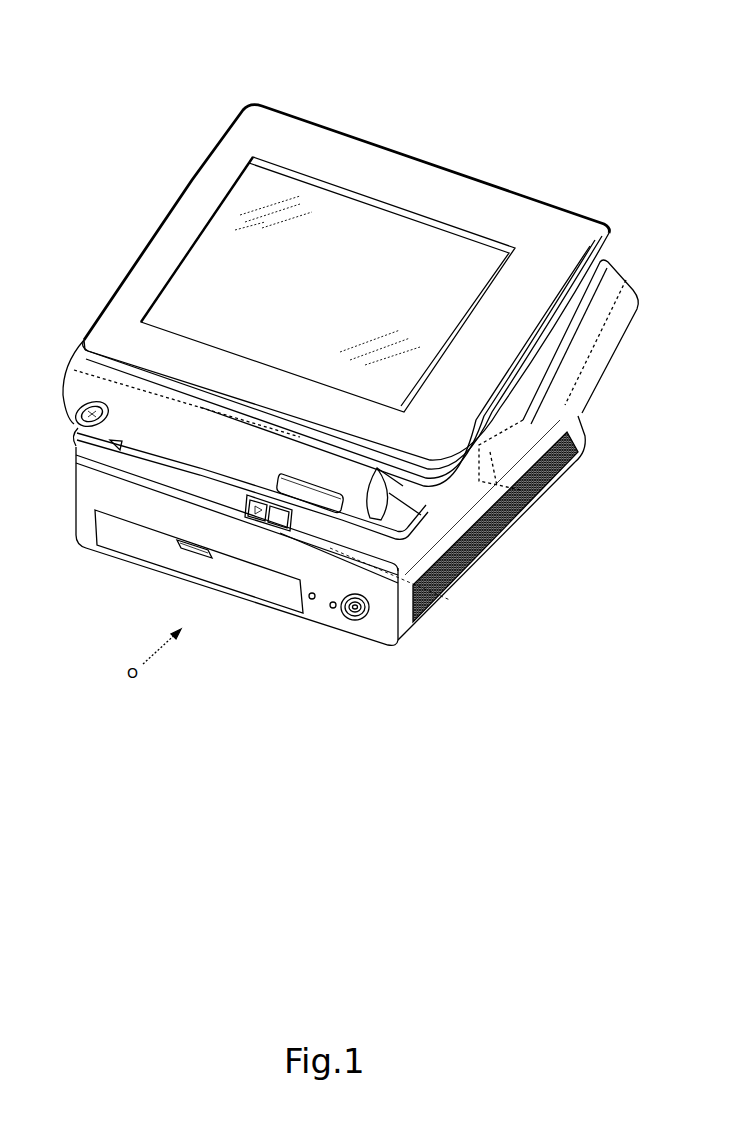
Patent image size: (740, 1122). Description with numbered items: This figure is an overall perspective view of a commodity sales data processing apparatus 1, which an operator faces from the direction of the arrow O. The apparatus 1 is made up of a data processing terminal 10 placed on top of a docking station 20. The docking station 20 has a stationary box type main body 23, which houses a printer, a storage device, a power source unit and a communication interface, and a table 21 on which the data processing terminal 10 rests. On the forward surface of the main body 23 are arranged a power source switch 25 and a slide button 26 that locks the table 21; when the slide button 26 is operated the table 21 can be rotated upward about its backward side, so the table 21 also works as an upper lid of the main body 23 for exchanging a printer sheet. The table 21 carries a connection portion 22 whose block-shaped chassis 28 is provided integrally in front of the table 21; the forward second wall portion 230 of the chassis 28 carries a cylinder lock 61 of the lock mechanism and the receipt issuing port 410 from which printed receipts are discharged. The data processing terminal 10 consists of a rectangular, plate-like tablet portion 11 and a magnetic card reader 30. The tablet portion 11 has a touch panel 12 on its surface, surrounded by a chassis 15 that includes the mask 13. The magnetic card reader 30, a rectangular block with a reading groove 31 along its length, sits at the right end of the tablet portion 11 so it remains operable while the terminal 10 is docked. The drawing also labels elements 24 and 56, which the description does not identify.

The commodity sales data processing apparatus 1 is at (508, 68).
The data processing terminal 10 is at (299, 111).
The tablet portion 11 is at (485, 175).
The touch panel 12 is at (207, 250).
The mask 13 is at (147, 262).
The chassis 15 is at (413, 152).
The docking station 20 is at (69, 494).
The table 21 is at (445, 600).
The connection portion 22 is at (78, 352).
The main body 23 is at (73, 519).
The tray 24 is at (185, 566).
The power source switch 25 is at (352, 622).
The slide button 26 is at (260, 522).
The chassis 28 is at (63, 390).
The magnetic card reader 30 is at (607, 260).
The reading groove 31 is at (508, 522).
The operation button 56 is at (286, 530).
The cylinder lock 61 is at (75, 425).
The second wall portion 230 is at (334, 514).
The receipt issuing port 410 is at (140, 465).